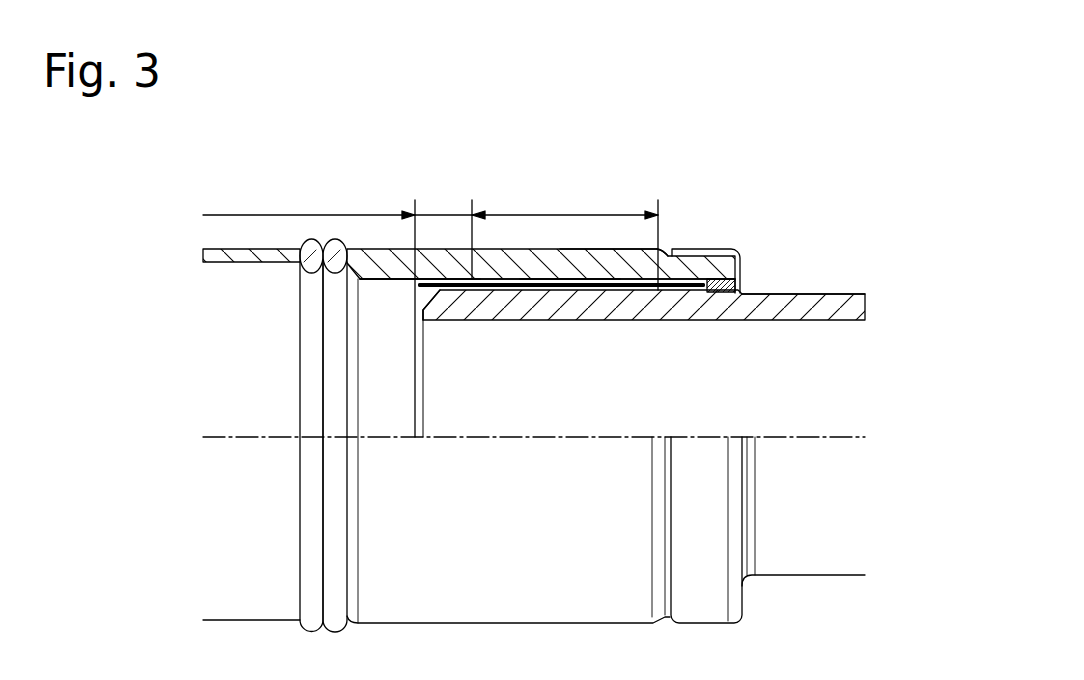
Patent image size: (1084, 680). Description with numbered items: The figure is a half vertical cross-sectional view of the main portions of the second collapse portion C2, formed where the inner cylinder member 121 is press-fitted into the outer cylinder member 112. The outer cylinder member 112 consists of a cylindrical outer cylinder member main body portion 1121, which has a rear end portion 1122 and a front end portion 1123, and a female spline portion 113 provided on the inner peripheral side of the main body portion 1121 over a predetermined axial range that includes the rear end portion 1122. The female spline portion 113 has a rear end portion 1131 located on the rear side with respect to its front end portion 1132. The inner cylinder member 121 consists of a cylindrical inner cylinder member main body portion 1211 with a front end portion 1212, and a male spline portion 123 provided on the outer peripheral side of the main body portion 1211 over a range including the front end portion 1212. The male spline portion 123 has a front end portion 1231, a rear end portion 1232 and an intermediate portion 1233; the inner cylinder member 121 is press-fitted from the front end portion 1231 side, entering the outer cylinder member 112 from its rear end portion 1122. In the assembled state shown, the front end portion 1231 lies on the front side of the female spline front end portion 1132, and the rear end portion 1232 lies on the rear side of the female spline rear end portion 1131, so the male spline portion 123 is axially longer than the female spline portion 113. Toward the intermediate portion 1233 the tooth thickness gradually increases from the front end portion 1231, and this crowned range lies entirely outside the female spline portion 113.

The outer cylinder member 112 is at (439, 249).
The outer cylinder member main body portion 1121 is at (590, 257).
The rear end portion 1122 is at (718, 259).
The front end portion 1123 is at (323, 273).
The female spline portion 113 is at (510, 288).
The rear end portion of the female spline portion 1131 is at (662, 286).
The front end portion of the female spline portion 1132 is at (451, 284).
The inner cylinder member 121 is at (840, 294).
The inner cylinder member main body portion 1211 is at (850, 312).
The front end portion 1212 is at (428, 307).
The male spline portion 123 is at (617, 287).
The front end portion of the male spline portion 1231 is at (437, 280).
The rear end portion of the male spline portion 1232 is at (704, 282).
The intermediate portion of the male spline portion 1233 is at (567, 287).
The second collapse portion C2 is at (675, 193).